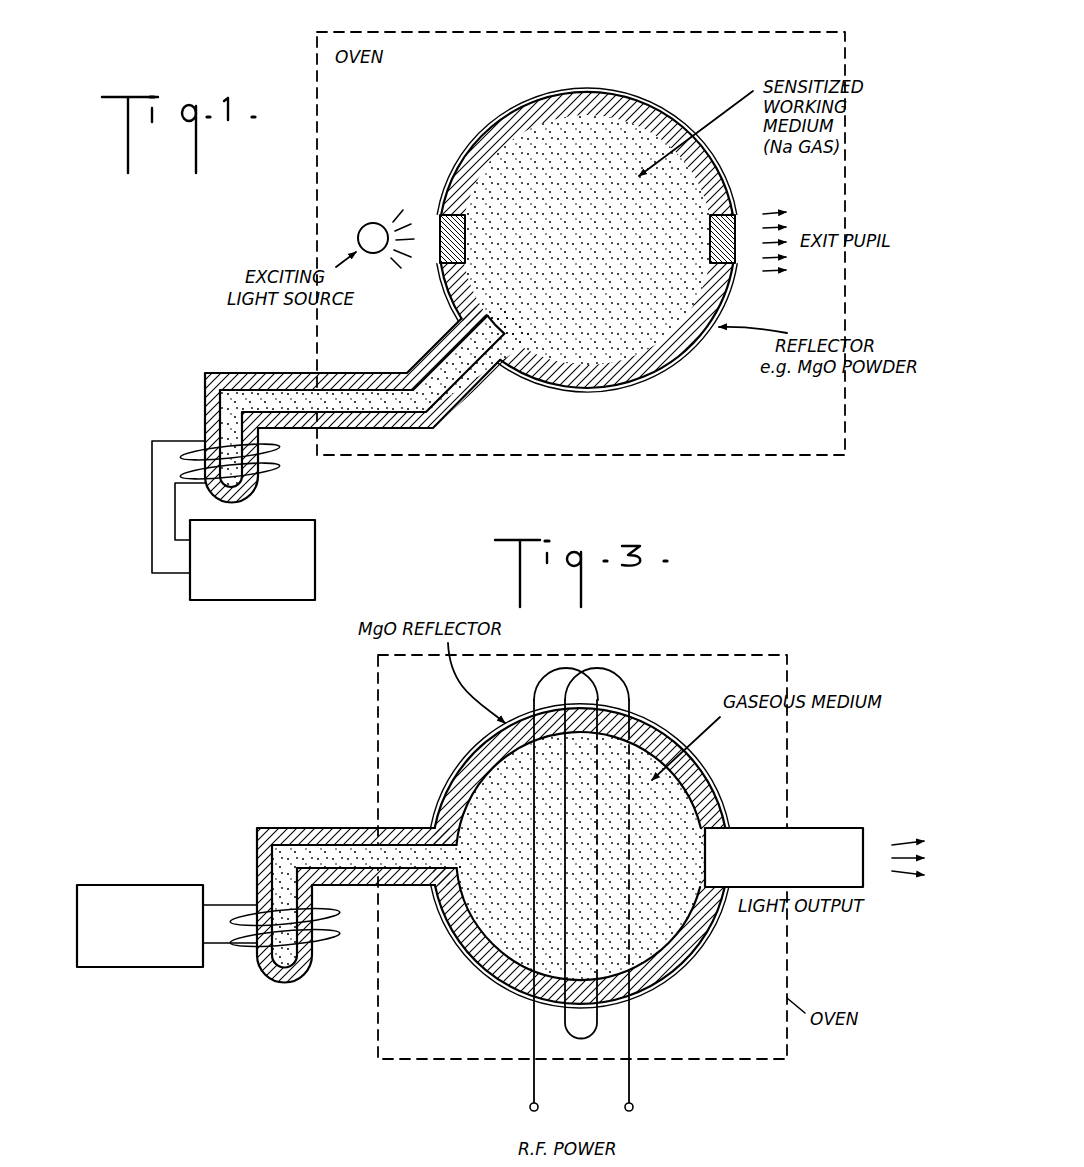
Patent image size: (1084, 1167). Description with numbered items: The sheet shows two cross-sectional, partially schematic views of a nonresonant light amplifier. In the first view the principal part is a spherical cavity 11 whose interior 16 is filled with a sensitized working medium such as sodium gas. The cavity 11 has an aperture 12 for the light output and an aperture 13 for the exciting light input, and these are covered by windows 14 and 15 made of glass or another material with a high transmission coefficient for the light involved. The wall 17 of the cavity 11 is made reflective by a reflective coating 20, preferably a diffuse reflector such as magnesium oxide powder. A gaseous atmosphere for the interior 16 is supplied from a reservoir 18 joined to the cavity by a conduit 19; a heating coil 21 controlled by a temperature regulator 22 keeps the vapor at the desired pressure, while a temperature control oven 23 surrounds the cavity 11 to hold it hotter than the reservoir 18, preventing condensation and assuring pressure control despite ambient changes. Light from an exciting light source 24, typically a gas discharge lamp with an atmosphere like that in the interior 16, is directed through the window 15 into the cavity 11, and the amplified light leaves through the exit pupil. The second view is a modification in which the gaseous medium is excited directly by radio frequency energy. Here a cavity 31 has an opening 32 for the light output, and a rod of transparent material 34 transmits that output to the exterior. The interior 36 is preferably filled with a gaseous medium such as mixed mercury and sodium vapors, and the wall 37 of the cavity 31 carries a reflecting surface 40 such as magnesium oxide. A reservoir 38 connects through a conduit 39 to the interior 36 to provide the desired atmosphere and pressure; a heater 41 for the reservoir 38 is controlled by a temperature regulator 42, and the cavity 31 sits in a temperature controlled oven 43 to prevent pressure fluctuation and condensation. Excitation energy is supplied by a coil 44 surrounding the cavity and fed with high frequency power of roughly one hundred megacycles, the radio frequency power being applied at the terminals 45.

In FIG. 1, the spherical cavity 11 is at (500, 281).
In FIG. 1, the aperture 12 is at (733, 197).
In FIG. 1, the aperture 13 is at (447, 205).
In FIG. 1, the window 14 is at (733, 257).
In FIG. 1, the window 15 is at (440, 248).
In FIG. 1, the interior 16 is at (530, 142).
In FIG. 1, the wall 17 is at (652, 341).
In FIG. 1, the reservoir 18 is at (207, 432).
In FIG. 1, the conduit 19 is at (410, 430).
In FIG. 1, the reflective coating 20 is at (717, 313).
In FIG. 1, the heating coil 21 is at (265, 466).
In FIG. 1, the temperature regulator 22 is at (316, 531).
In FIG. 1, the temperature control oven 23 is at (497, 33).
In FIG. 1, the exciting light source 24 is at (358, 238).
In FIG. 3, the cavity 31 is at (590, 838).
In FIG. 3, the opening 32 is at (725, 818).
In FIG. 3, the rod of transparent material 34 is at (807, 828).
In FIG. 3, the interior 36 is at (490, 788).
In FIG. 3, the wall 37 is at (495, 765).
In FIG. 3, the reservoir 38 is at (283, 985).
In FIG. 3, the conduit 39 is at (355, 887).
In FIG. 3, the reflecting surface 40 is at (518, 717).
In FIG. 3, the heater 41 is at (327, 943).
In FIG. 3, the temperature regulator 42 is at (143, 880).
In FIG. 3, the temperature controlled oven 43 is at (787, 1052).
In FIG. 3, the coil 44 is at (597, 1033).
In FIG. 3, the RF power terminals 45 is at (625, 1107).